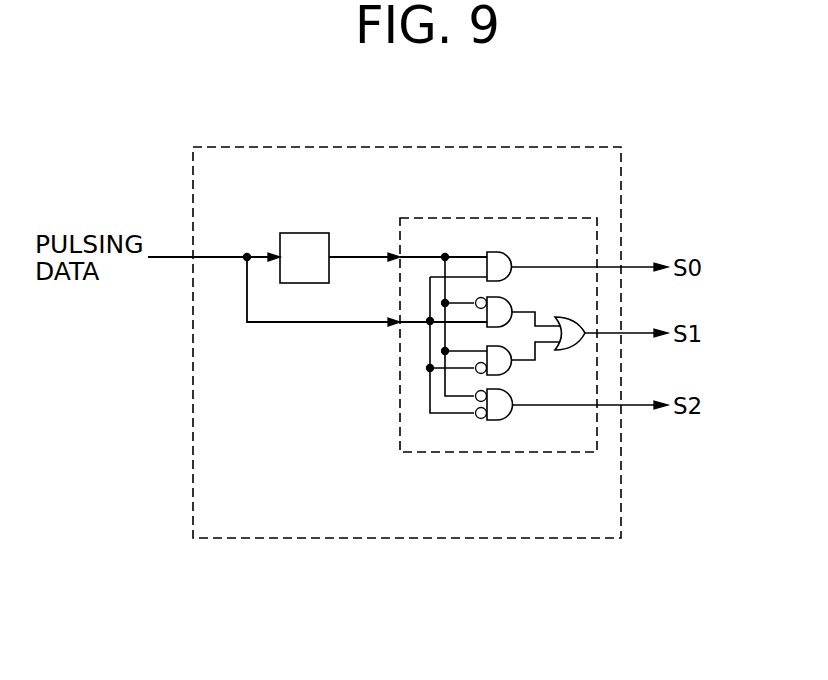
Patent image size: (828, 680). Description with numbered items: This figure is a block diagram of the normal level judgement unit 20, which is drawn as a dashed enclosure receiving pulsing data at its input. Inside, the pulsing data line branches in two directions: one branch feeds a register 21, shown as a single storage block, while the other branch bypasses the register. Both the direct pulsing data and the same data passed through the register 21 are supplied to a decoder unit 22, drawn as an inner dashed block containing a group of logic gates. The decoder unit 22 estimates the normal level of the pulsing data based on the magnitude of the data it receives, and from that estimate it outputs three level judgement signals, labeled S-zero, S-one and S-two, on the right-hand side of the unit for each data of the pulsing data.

The normal level judgement unit 20 is at (621, 186).
The register 21 is at (317, 233).
The decoder unit 22 is at (563, 218).